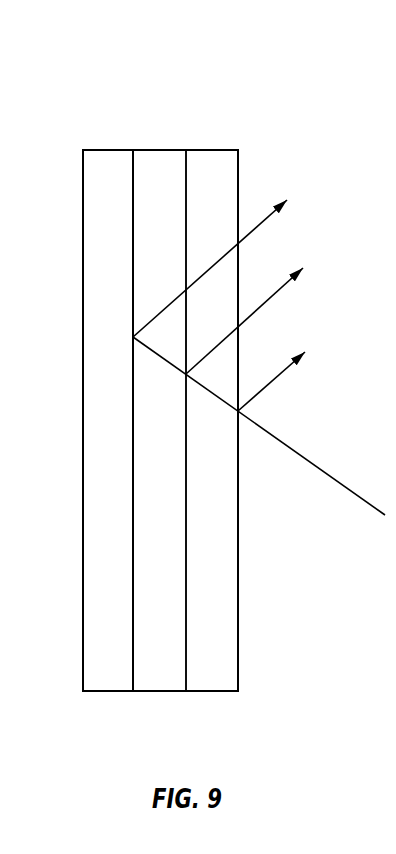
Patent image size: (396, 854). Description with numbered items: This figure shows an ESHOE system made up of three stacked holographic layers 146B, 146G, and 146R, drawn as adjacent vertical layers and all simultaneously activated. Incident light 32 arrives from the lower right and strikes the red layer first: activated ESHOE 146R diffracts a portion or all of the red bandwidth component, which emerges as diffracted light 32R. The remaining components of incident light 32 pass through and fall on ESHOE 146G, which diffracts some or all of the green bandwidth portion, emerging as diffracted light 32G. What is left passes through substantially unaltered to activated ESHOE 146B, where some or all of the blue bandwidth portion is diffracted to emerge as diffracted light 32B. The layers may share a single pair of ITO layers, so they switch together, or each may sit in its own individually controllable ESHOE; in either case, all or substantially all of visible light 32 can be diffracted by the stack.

The holographic layer 146B is at (108, 150).
The holographic layer 146G is at (142, 150).
The holographic layer 146R is at (222, 150).
The incident light 32 is at (303, 457).
The diffracted light 32B is at (268, 220).
The diffracted light 32G is at (280, 290).
The diffracted light 32R is at (290, 368).